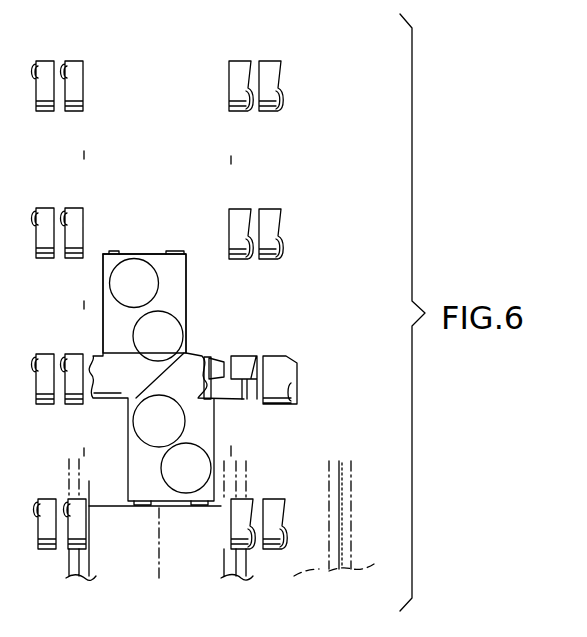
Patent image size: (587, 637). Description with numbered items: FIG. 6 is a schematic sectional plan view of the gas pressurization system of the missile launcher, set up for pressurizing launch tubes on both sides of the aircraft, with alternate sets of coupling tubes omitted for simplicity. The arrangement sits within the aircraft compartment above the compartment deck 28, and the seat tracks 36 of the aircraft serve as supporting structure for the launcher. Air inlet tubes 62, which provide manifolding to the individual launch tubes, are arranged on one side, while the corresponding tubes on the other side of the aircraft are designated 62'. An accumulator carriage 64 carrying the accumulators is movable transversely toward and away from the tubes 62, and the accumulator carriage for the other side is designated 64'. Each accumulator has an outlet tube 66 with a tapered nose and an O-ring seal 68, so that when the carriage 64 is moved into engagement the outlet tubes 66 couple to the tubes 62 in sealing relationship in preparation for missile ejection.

The compartment deck 28 is at (178, 142).
The seat tracks 36 is at (338, 512).
The air inlet tubes 62 is at (278, 303).
The air inlet tubes 62' is at (54, 298).
The accumulator carriage 64 is at (166, 416).
The accumulator carriage 64' is at (155, 269).
The outlet tube 66 is at (200, 355).
The O-ring seal 68 is at (207, 355).